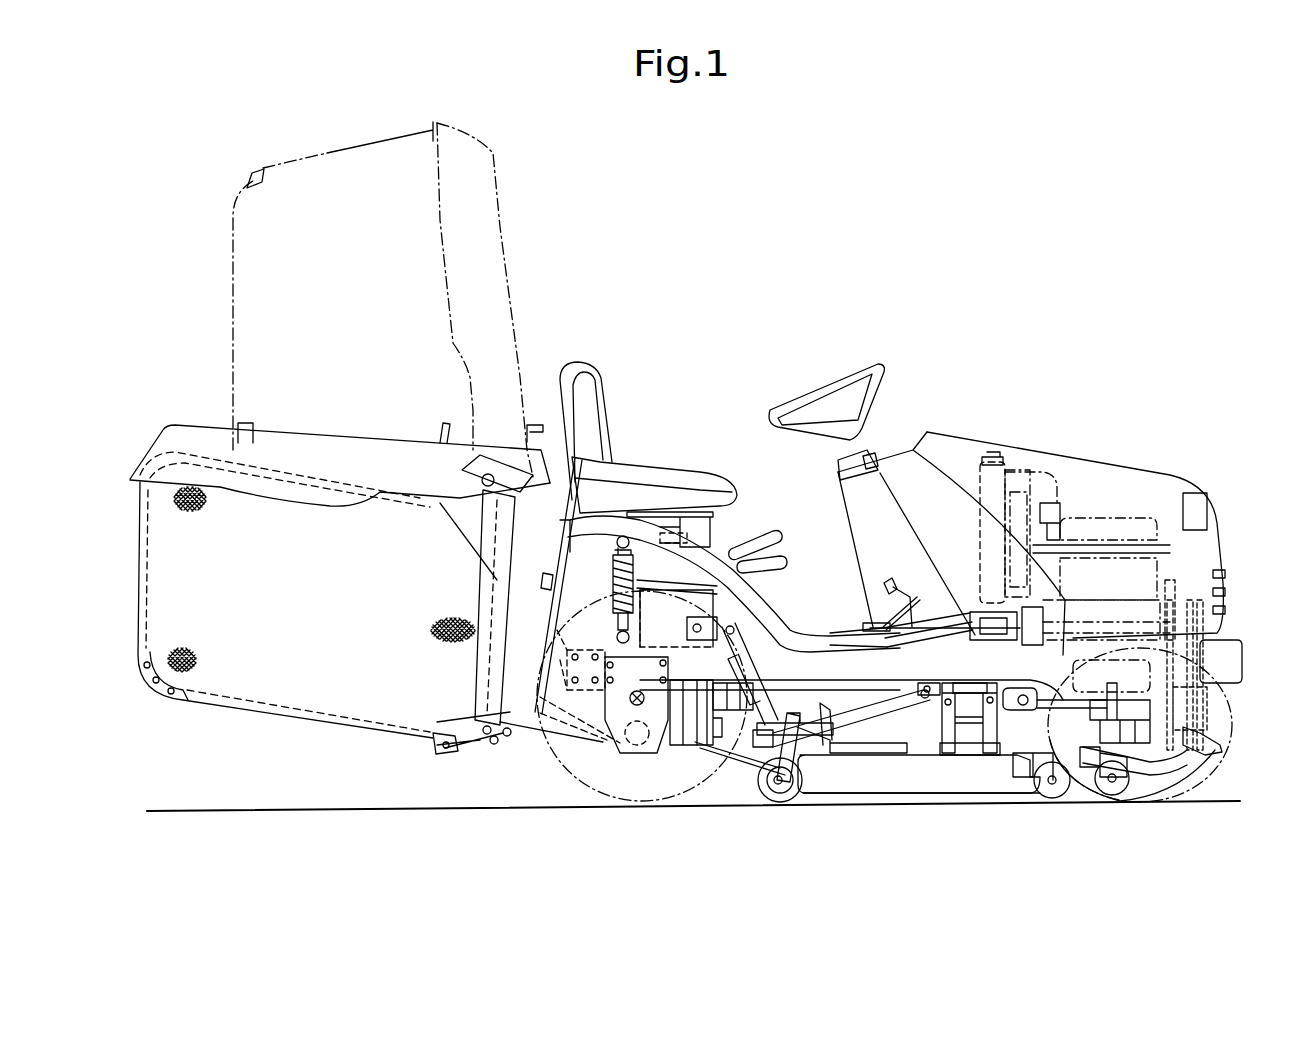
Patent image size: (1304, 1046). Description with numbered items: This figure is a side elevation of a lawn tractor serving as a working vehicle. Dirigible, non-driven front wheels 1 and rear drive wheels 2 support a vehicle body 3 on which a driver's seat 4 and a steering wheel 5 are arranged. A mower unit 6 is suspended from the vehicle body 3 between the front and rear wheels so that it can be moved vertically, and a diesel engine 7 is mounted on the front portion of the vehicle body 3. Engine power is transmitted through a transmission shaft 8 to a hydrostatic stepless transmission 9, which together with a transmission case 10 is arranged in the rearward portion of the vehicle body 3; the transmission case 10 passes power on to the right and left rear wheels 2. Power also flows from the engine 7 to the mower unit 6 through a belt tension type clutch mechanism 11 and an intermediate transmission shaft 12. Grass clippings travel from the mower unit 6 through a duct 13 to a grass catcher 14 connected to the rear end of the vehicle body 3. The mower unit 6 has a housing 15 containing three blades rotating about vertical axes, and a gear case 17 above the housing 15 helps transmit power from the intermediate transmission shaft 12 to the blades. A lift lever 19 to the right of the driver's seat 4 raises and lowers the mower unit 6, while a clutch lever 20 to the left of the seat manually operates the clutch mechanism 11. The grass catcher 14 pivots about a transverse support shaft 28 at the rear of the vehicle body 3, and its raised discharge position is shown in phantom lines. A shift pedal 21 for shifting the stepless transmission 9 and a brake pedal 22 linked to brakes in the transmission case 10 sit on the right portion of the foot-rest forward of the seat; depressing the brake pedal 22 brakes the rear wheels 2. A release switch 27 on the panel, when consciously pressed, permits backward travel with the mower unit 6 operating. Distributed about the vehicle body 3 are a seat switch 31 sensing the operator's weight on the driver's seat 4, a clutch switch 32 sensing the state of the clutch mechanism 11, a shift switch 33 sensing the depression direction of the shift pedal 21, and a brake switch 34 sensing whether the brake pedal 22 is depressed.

The front wheels 1 is at (1170, 787).
The rear drive wheels 2 is at (567, 777).
The vehicle body 3 is at (857, 668).
The driver's seat 4 is at (592, 398).
The steering wheel 5 is at (852, 381).
The mower unit 6 is at (898, 804).
The diesel engine 7 is at (1112, 517).
The transmission shaft 8 is at (943, 623).
The hydrostatic stepless transmission 9 is at (767, 623).
The transmission case 10 is at (680, 745).
The belt tension type clutch mechanism 11 is at (1214, 673).
The intermediate transmission shaft 12 is at (1055, 687).
The duct 13 is at (744, 778).
The grass catcher 14 is at (336, 437).
The housing 15 is at (938, 782).
The gear case 17 is at (968, 700).
The lift lever 19 is at (755, 533).
The clutch lever 20 is at (785, 559).
The shift pedal 21 is at (897, 623).
The brake pedal 22 is at (886, 580).
The release switch 27 is at (879, 452).
The support shaft 28 is at (493, 458).
The seat switch 31 is at (690, 520).
The clutch switch 32 is at (1123, 633).
The shift switch 33 is at (923, 687).
The brake switch 34 is at (970, 690).